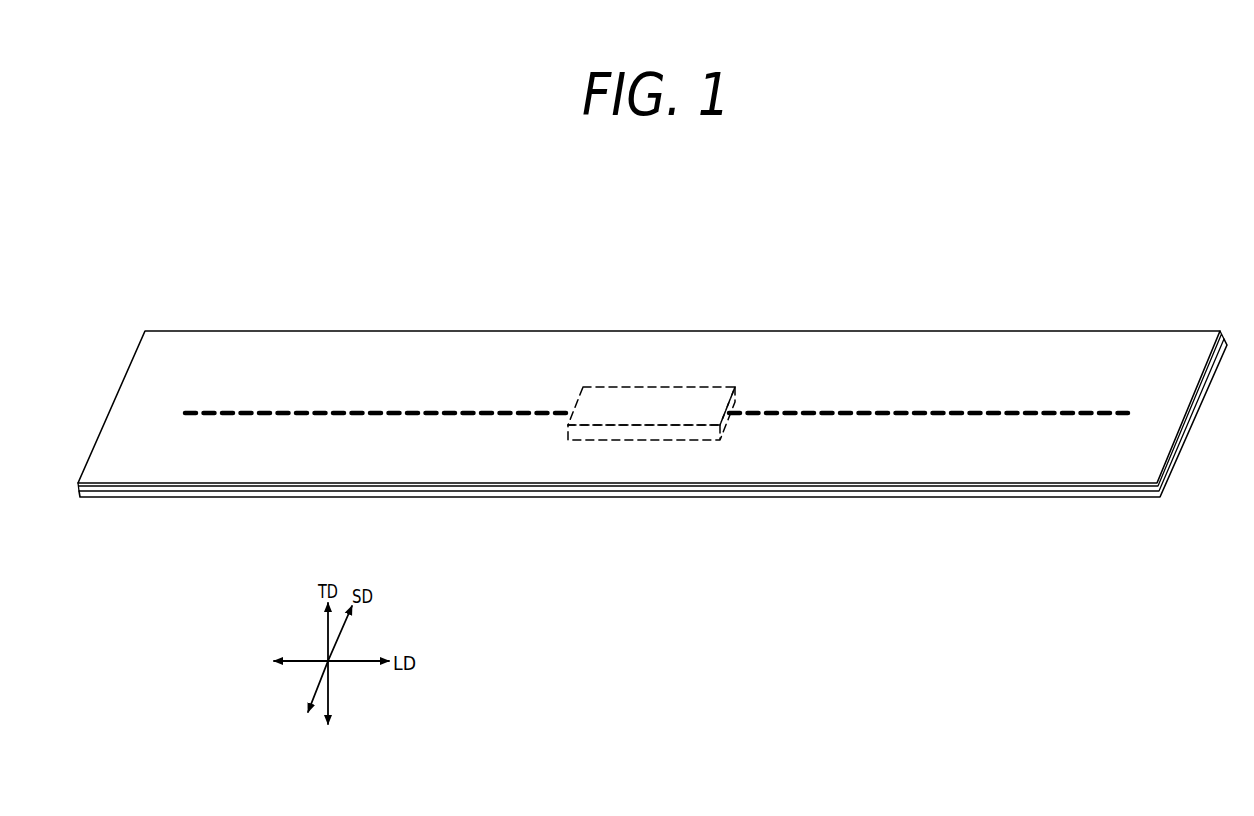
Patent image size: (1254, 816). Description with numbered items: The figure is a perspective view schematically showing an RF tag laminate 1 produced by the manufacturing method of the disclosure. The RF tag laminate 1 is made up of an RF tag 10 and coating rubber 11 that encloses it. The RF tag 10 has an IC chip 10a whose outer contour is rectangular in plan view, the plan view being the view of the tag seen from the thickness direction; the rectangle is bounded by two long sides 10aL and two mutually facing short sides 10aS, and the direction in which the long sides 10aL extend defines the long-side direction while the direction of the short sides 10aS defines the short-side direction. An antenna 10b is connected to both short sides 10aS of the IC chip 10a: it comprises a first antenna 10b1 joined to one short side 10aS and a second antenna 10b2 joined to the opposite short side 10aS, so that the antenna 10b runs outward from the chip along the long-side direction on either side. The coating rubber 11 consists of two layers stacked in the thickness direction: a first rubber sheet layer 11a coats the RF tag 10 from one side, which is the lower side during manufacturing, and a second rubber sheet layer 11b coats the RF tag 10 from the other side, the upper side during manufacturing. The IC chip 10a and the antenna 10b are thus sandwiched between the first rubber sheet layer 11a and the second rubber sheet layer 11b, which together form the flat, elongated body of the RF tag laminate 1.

The RF tag laminate 1 is at (694, 291).
The RF tag 10 is at (707, 385).
The IC chip 10a is at (642, 402).
The long side 10aL is at (643, 430).
The short side 10aS is at (723, 425).
The antenna 10b is at (696, 317).
The first antenna 10b1 is at (450, 411).
The second antenna 10b2 is at (1013, 410).
The coating rubber 11 is at (943, 326).
The first rubber sheet layer 11a is at (1015, 492).
The second rubber sheet layer 11b is at (942, 486).